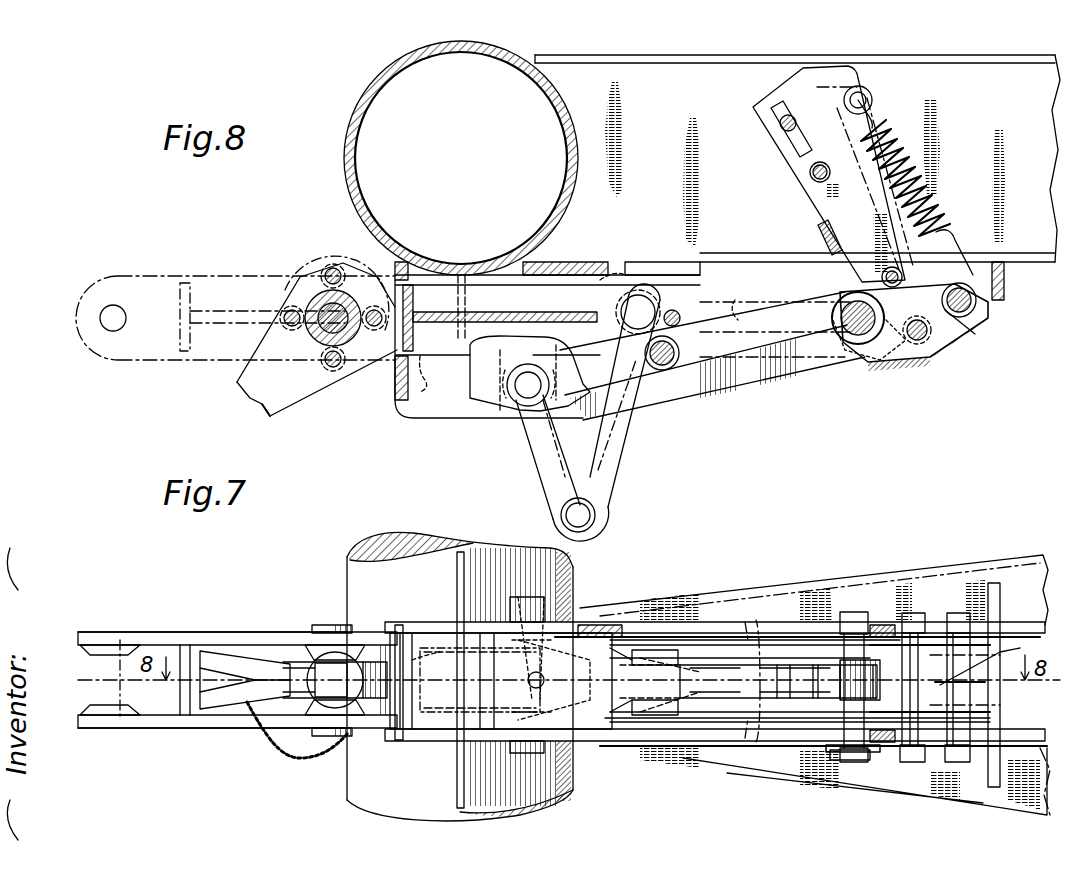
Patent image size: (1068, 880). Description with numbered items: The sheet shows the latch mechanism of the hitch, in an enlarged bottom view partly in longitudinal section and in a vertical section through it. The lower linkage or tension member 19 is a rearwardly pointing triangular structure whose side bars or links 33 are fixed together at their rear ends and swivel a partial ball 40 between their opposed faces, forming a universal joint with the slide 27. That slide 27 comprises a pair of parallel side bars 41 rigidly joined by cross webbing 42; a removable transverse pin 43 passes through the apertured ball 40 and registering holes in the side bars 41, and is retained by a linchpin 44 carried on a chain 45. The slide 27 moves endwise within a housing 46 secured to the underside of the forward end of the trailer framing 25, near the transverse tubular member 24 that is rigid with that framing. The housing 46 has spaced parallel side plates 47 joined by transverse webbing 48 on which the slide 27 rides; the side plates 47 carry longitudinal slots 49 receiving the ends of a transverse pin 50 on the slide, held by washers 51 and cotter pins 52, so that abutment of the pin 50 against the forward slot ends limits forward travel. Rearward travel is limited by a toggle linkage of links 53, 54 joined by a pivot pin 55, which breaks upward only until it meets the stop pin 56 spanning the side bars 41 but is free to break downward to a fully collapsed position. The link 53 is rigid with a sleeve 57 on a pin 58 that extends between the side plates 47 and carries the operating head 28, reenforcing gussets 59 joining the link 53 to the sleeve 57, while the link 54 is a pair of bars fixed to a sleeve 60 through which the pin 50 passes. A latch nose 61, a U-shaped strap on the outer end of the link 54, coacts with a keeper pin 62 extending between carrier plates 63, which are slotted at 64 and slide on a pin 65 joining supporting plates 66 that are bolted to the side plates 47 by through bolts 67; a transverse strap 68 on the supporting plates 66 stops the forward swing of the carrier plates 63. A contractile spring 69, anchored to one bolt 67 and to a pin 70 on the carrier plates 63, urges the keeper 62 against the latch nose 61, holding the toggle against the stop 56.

In FIG. 8, the lower linkage 19 is at (322, 400).
In FIG. 7, the lower linkage 19 is at (227, 716).
In FIG. 8, the transverse tubular member 24 is at (478, 44).
In FIG. 7, the transverse tubular member 24 is at (460, 676).
In FIG. 8, the framing 25 is at (690, 58).
In FIG. 7, the framing 25 is at (1020, 572).
In FIG. 8, the slide 27 is at (610, 280).
In FIG. 7, the slide 27 is at (372, 630).
In FIG. 8, the operating head 28 is at (510, 405).
In FIG. 7, the operating head 28 is at (525, 597).
In FIG. 8, the links 33 is at (278, 410).
In FIG. 7, the links 33 is at (245, 685).
In FIG. 7, the partial ball 40 is at (385, 720).
In FIG. 8, the side bars 41 is at (250, 276).
In FIG. 7, the side bars 41 is at (360, 632).
In FIG. 8, the cross webbing 42 is at (413, 306).
In FIG. 7, the cross webbing 42 is at (435, 664).
In FIG. 7, the transverse pin 43 is at (345, 712).
In FIG. 7, the linchpin 44 is at (350, 712).
In FIG. 7, the chain 45 is at (312, 752).
In FIG. 8, the housing 46 is at (808, 396).
In FIG. 7, the housing 46 is at (752, 620).
In FIG. 8, the side plates 47 is at (712, 392).
In FIG. 7, the side plates 47 is at (410, 622).
In FIG. 8, the transverse webbing 48 is at (560, 268).
In FIG. 7, the transverse webbing 48 is at (501, 681).
In FIG. 8, the slots 49 is at (737, 303).
In FIG. 8, the transverse pin 50 is at (662, 306).
In FIG. 7, the transverse pin 50 is at (845, 762).
In FIG. 7, the washers 51 is at (845, 612).
In FIG. 7, the cotter pins 52 is at (872, 625).
In FIG. 8, the toggle link 53 is at (585, 400).
In FIG. 7, the toggle link 53 is at (582, 637).
In FIG. 8, the toggle link 54 is at (745, 392).
In FIG. 7, the toggle link 54 is at (728, 665).
In FIG. 8, the pivot pin 55 is at (664, 372).
In FIG. 7, the pivot pin 55 is at (632, 660).
In FIG. 8, the stop pin 56 is at (681, 316).
In FIG. 7, the stop pin 56 is at (745, 632).
In FIG. 8, the sleeve 57 is at (505, 398).
In FIG. 7, the sleeve 57 is at (500, 668).
In FIG. 8, the pin 58 is at (540, 405).
In FIG. 7, the pin 58 is at (515, 690).
In FIG. 7, the reenforcing gussets 59 is at (632, 706).
In FIG. 7, the sleeve 60 is at (840, 700).
In FIG. 8, the latch nose 61 is at (905, 288).
In FIG. 7, the latch nose 61 is at (950, 682).
In FIG. 8, the keeper pin 62 is at (902, 274).
In FIG. 7, the keeper pin 62 is at (935, 620).
In FIG. 8, the carrier plates 63 is at (810, 205).
In FIG. 7, the carrier plates 63 is at (750, 668).
In FIG. 8, the slots 64 is at (800, 150).
In FIG. 8, the pin 65 is at (800, 108).
In FIG. 7, the pin 65 is at (792, 682).
In FIG. 8, the supporting plates 66 is at (930, 334).
In FIG. 7, the supporting plates 66 is at (760, 640).
In FIG. 8, the through bolts 67 is at (975, 334).
In FIG. 7, the through bolts 67 is at (945, 768).
In FIG. 8, the transverse strap 68 is at (818, 234).
In FIG. 8, the contractile spring 69 is at (925, 190).
In FIG. 7, the contractile spring 69 is at (986, 665).
In FIG. 8, the pin 70 is at (870, 95).